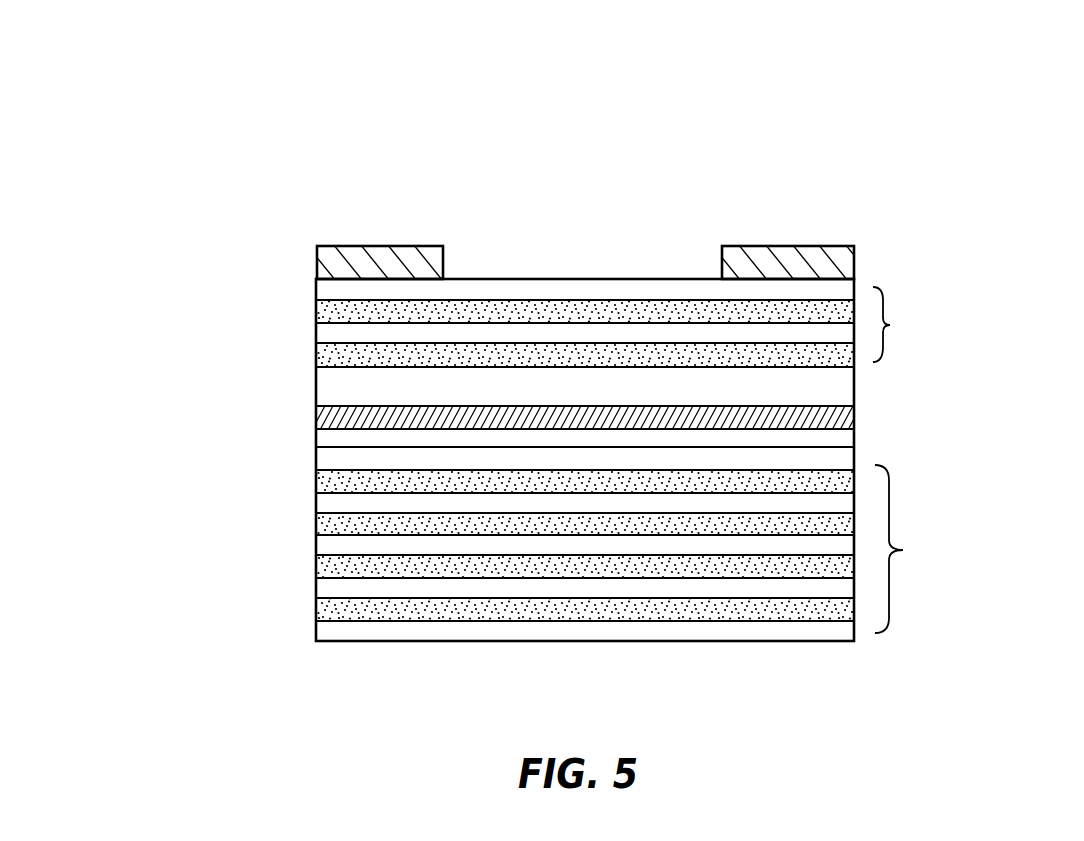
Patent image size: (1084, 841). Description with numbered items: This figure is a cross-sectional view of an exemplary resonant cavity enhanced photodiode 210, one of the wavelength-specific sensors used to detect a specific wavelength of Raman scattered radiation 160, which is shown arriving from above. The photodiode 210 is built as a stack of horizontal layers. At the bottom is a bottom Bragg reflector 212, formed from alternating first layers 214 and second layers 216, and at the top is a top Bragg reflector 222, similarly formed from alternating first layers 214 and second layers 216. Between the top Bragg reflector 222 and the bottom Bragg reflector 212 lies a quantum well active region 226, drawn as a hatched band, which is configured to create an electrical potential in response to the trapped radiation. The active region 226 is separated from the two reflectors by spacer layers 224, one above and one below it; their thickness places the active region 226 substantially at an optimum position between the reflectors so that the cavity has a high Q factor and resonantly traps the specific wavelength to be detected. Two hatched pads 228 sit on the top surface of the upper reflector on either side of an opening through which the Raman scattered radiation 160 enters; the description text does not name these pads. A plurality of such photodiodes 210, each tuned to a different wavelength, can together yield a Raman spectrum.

The resonant cavity enhanced photodiode 210 is at (180, 121).
The Raman scattered radiation 160 is at (590, 162).
The electrode 228 is at (370, 247).
The first layer 214 is at (316, 286).
The second layer 216 is at (316, 308).
The spacer layer 224 is at (316, 382).
The active region 226 is at (316, 409).
The top Bragg reflector 222 is at (910, 324).
The bottom Bragg reflector 212 is at (917, 549).